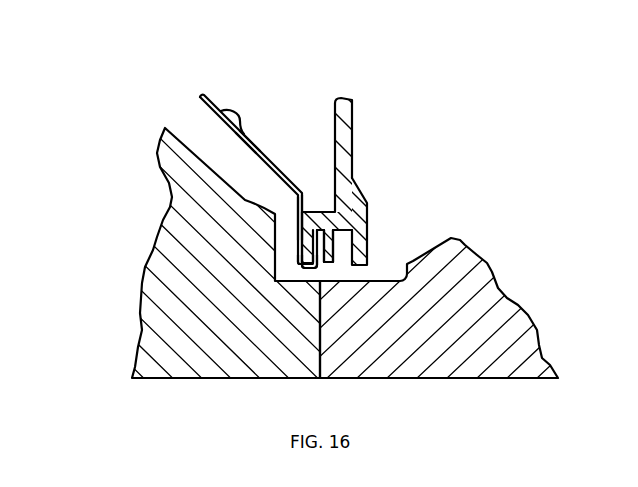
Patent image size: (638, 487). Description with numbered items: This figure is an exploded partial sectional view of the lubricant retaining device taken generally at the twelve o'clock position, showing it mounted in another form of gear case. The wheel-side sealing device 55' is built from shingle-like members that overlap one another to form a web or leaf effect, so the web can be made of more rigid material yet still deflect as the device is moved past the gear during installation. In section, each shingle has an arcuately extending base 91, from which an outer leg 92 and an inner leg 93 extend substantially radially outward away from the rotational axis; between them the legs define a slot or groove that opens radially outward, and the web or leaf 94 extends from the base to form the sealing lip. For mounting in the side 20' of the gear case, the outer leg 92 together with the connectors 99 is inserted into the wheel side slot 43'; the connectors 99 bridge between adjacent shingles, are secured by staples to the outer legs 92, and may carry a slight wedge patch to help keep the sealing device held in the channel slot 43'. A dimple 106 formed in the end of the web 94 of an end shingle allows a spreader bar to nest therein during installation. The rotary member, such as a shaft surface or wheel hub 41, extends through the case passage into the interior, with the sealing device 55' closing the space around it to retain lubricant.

The dimple 106 is at (232, 110).
The wheel-side sealing device 55' is at (258, 160).
The outer leg 92 is at (316, 210).
The side 20' is at (350, 125).
The web or leaf 94 is at (246, 152).
The inner leg 93 is at (297, 208).
The wheel side slot 43' is at (398, 213).
The connector 99 is at (322, 251).
The arcuately extending base 91 is at (306, 268).
The wheel hub 41 is at (334, 281).